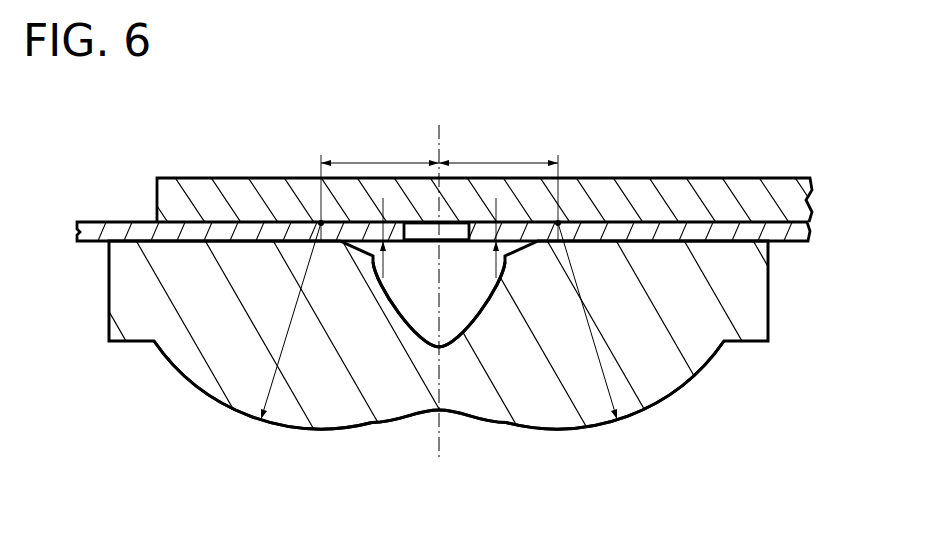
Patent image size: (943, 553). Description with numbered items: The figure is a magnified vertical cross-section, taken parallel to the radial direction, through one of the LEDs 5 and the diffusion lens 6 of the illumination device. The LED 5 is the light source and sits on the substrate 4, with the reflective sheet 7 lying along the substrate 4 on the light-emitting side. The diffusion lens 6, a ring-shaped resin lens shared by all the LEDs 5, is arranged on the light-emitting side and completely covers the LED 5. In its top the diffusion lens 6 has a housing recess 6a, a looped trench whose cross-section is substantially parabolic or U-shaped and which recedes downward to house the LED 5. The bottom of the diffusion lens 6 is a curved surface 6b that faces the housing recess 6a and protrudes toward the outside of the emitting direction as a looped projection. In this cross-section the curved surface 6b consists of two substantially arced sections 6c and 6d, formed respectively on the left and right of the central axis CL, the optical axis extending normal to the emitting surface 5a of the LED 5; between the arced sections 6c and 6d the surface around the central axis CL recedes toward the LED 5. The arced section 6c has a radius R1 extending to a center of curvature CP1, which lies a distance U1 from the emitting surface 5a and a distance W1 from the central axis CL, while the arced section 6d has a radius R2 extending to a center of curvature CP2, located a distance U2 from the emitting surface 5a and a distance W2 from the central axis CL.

The substrate 4 is at (740, 178).
The reflective sheet 7 is at (98, 220).
The LED 5 is at (425, 251).
The emitting surface 5a is at (447, 244).
The diffusion lens 6 is at (287, 469).
The housing recess 6a is at (487, 312).
The curved surface 6b is at (365, 442).
The substantially arced section 6c is at (233, 409).
The substantially arced section 6d is at (637, 417).
The center of curvature CP1 is at (320, 222).
The center of curvature CP2 is at (559, 222).
The radius R1 is at (291, 321).
The radius R2 is at (587, 321).
The distance W1 is at (380, 153).
The distance W2 is at (498, 153).
The distance U1 is at (398, 239).
The distance U2 is at (479, 239).
The central axis CL is at (444, 447).